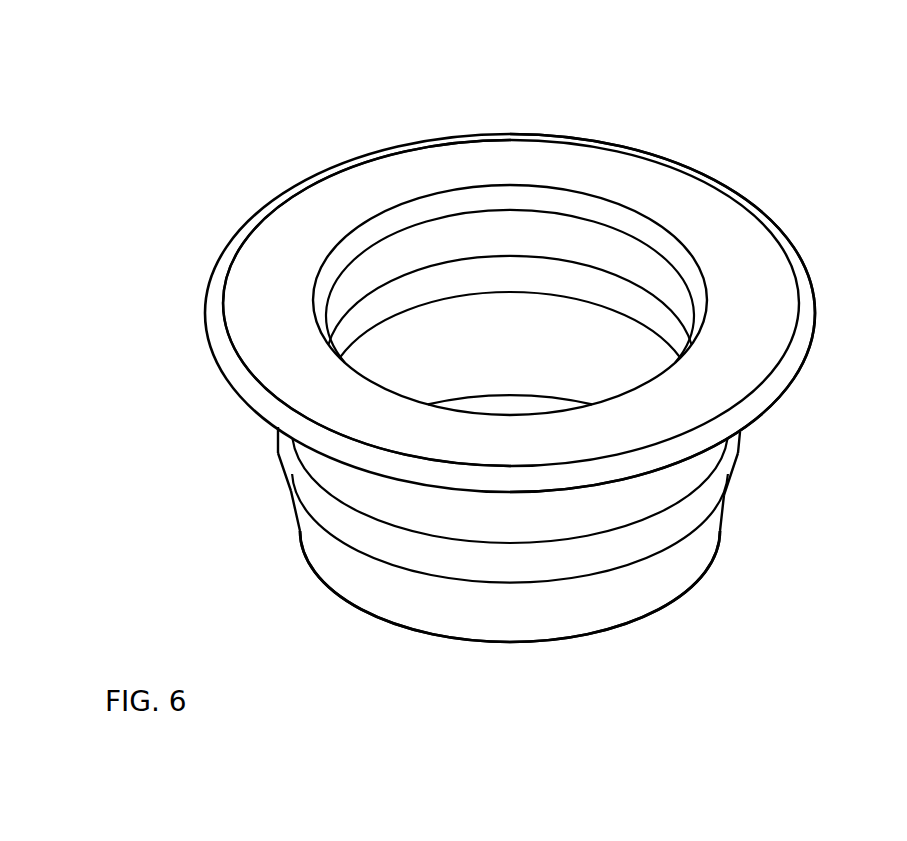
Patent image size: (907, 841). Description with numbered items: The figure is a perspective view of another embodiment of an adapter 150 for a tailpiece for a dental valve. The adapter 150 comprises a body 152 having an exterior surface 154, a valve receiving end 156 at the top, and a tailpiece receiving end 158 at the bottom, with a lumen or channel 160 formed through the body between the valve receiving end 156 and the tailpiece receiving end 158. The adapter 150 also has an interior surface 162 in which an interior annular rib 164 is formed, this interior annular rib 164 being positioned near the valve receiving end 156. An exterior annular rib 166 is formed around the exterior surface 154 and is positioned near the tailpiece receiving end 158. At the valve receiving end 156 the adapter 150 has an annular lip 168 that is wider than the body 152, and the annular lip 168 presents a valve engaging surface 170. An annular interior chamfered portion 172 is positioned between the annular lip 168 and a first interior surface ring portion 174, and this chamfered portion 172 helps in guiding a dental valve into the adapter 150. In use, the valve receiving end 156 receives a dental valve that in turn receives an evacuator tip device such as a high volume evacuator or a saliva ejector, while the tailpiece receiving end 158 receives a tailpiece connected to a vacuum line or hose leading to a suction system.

The adapter 150 is at (568, 122).
The body 152 is at (770, 476).
The exterior surface 154 is at (672, 568).
The valve receiving end 156 is at (773, 165).
The tailpiece receiving end 158 is at (633, 648).
The lumen or channel 160 is at (435, 343).
The interior surface 162 is at (615, 351).
The interior annular rib 164 is at (490, 270).
The exterior annular rib 166 is at (292, 452).
The annular lip 168 is at (822, 327).
The valve engaging surface 170 is at (287, 272).
The annular interior chamfered portion 172 is at (455, 207).
The first interior surface ring portion 174 is at (620, 257).